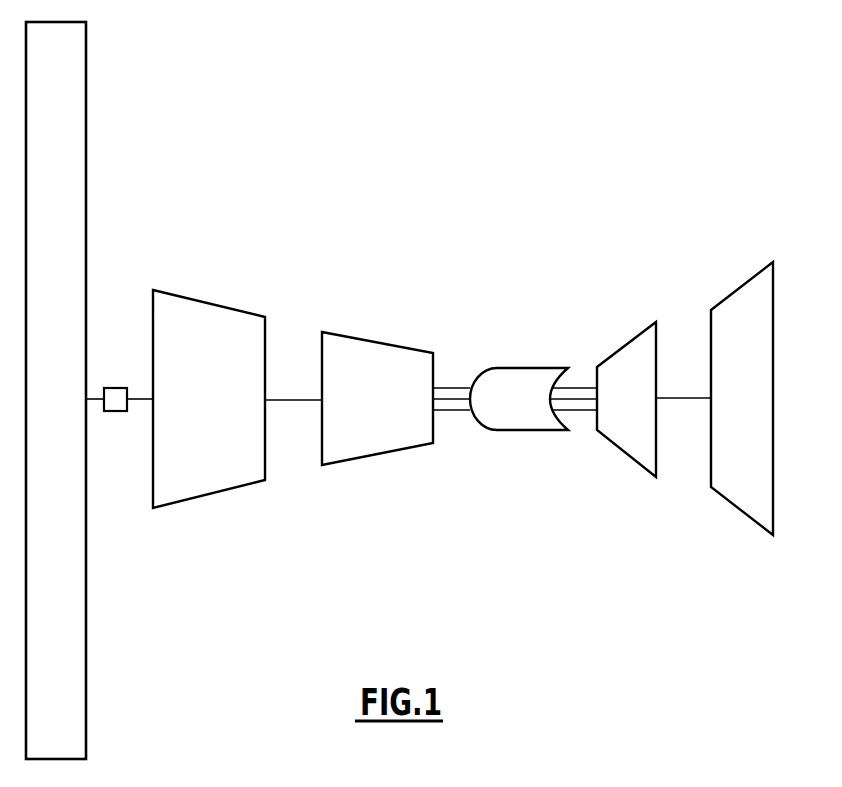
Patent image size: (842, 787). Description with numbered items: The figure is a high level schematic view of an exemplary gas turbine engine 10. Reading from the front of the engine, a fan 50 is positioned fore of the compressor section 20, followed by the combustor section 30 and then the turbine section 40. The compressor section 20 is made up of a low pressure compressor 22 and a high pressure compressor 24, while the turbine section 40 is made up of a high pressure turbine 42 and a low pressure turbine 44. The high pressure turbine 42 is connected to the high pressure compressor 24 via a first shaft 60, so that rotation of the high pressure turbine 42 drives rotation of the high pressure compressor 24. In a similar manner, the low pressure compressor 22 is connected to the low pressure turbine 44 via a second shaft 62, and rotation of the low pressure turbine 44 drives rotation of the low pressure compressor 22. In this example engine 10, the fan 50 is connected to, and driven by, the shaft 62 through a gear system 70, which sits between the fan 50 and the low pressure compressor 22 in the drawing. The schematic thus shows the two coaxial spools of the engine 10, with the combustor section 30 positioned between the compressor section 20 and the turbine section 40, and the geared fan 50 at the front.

The gas turbine engine 10 is at (486, 106).
The compressor section 20 is at (433, 241).
The low pressure compressor 22 is at (200, 503).
The high pressure compressor 24 is at (370, 457).
The combustor section 30 is at (517, 368).
The turbine section 40 is at (773, 241).
The high pressure turbine 42 is at (623, 453).
The low pressure turbine 44 is at (742, 513).
The fan 50 is at (86, 83).
The first shaft 60 is at (452, 412).
The second shaft 62 is at (288, 400).
The gear system 70 is at (115, 411).